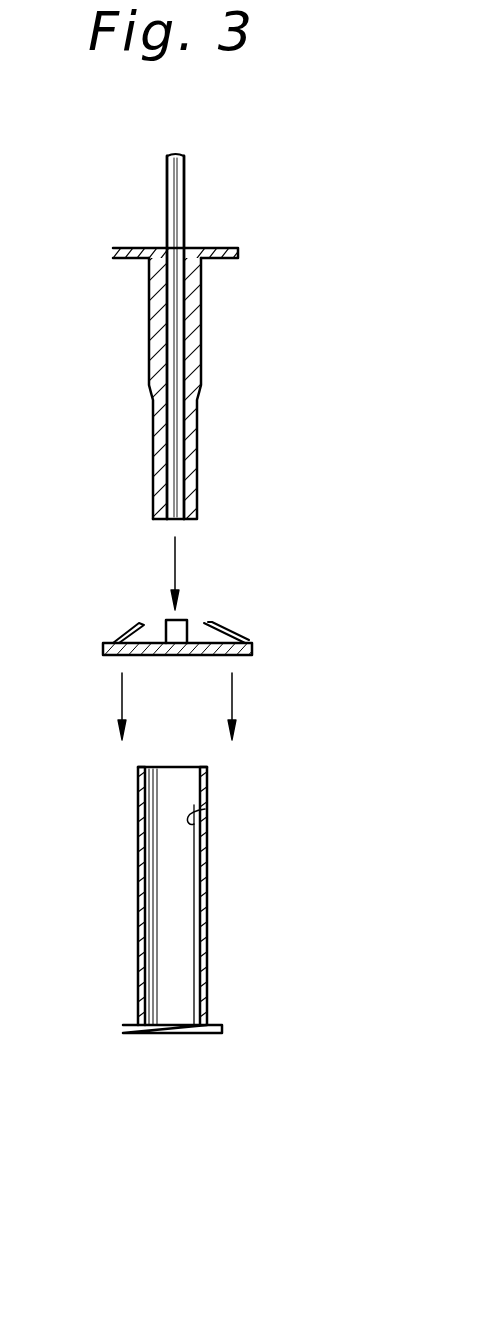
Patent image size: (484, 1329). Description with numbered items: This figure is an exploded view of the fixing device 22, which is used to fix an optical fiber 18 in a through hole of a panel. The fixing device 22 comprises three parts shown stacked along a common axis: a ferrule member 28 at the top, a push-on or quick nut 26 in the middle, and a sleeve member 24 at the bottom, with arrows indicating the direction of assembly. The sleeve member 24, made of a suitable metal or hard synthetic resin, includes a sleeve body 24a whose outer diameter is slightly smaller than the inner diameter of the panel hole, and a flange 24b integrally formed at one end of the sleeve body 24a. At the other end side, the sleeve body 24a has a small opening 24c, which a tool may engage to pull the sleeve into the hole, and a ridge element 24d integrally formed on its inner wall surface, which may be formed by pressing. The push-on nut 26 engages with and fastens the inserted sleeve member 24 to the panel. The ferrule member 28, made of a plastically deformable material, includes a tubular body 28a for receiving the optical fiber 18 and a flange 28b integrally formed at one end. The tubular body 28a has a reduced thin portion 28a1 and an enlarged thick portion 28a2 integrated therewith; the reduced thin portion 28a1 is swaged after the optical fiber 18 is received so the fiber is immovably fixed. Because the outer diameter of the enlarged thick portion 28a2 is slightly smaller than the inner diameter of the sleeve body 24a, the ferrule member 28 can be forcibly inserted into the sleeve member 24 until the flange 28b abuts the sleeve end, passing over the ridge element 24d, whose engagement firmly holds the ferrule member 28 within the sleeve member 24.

The optical fiber 18 is at (186, 198).
The fixing device 22 is at (272, 575).
The sleeve member 24 is at (207, 905).
The sleeve body 24a is at (207, 863).
The flange 24b is at (124, 1034).
The small opening 24c is at (142, 800).
The ridge element 24d is at (205, 809).
The push-on nut 26 is at (253, 658).
The ferrule member 28 is at (201, 340).
The tubular body 28a is at (201, 378).
The reduced thin portion 28a1 is at (160, 475).
The enlarged thick portion 28a2 is at (153, 330).
The flange 28b is at (212, 248).